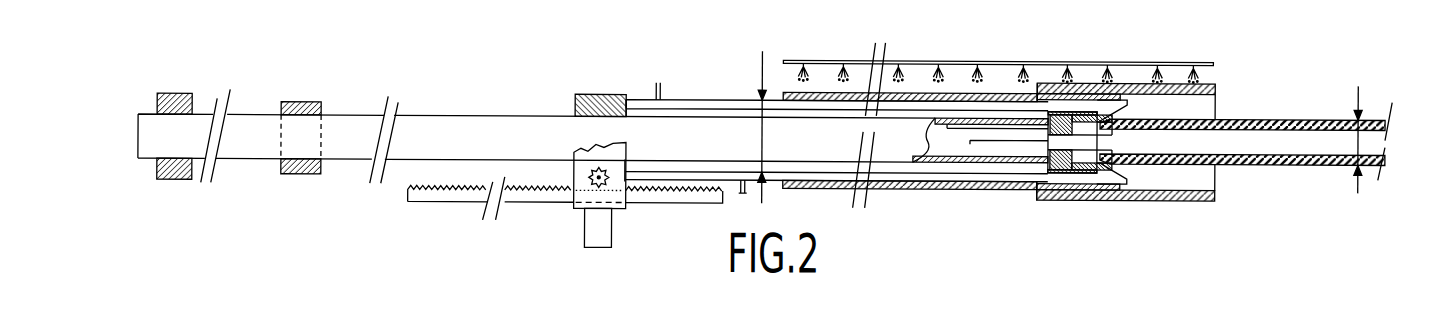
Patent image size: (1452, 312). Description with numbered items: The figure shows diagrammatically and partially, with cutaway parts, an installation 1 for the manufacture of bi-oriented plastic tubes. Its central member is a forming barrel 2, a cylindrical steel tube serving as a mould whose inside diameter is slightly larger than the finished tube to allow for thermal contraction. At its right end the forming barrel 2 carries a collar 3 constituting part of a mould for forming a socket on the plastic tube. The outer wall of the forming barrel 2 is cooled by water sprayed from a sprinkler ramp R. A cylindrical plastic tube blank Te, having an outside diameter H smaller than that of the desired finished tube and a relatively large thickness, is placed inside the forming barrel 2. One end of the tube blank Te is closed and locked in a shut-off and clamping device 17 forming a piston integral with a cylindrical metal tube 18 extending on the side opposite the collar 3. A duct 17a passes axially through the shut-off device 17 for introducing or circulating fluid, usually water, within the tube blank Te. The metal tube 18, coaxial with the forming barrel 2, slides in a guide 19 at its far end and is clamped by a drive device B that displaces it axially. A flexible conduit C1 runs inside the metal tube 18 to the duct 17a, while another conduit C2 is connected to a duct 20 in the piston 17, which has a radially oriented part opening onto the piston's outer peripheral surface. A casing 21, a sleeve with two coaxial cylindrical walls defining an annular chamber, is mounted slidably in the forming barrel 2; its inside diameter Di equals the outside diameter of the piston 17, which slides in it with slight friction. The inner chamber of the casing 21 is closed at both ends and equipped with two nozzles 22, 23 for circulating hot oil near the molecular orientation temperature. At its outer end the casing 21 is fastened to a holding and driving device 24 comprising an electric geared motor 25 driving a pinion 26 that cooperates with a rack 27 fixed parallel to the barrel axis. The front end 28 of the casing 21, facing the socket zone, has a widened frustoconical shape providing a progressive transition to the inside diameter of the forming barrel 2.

The drive device B is at (175, 86).
The guide 19 is at (303, 98).
The cylindrical metal tube 18 is at (478, 130).
The holding and driving device 24 is at (593, 91).
The nozzle 22 is at (657, 86).
The casing 21 is at (716, 92).
The installation 1 is at (740, 73).
The inside diameter of the casing Di is at (762, 62).
The nozzle 23 is at (740, 192).
The forming barrel 2 is at (897, 184).
The sprinkler ramp R is at (947, 56).
The conduit C2 is at (960, 124).
The conduit C1 is at (1003, 140).
The shut-off and clamping device 17 is at (1062, 168).
The duct 20 is at (1064, 106).
The front end of the casing 28 is at (1107, 196).
The collar 3 is at (1091, 72).
The duct 17a is at (1134, 100).
The tube blank Te is at (1272, 113).
The outside diameter of the tube blank H is at (1358, 88).
The rack 27 is at (443, 194).
The pinion 26 is at (634, 206).
The electric geared motor 25 is at (592, 224).